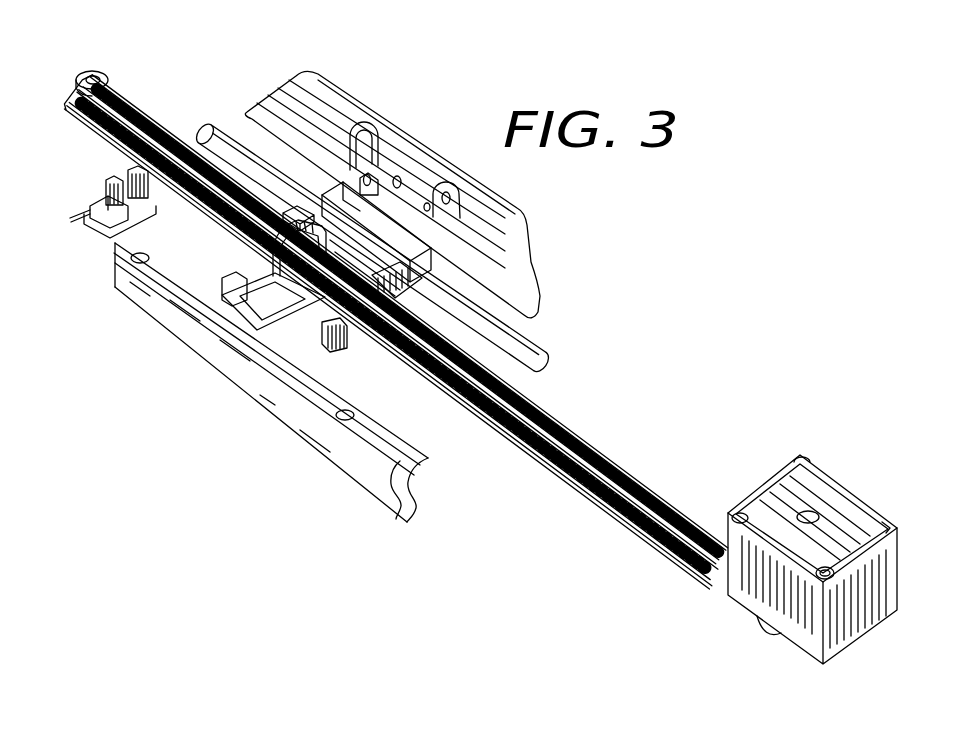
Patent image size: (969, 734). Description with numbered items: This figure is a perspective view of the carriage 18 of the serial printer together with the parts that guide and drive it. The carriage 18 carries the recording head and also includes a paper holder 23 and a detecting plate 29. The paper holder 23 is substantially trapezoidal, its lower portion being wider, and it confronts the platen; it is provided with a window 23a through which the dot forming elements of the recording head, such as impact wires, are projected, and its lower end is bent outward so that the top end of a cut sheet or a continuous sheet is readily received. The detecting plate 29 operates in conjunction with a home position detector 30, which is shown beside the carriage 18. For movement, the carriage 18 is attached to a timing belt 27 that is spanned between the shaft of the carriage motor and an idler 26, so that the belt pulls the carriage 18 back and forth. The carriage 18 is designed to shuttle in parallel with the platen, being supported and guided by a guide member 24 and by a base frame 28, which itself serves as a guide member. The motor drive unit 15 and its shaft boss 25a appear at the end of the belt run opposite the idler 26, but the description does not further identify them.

The stepper motor 15 is at (828, 483).
The carriage 18 is at (350, 322).
The paper holder 23 is at (537, 294).
The window 23a is at (376, 162).
The guide member 24 is at (545, 343).
The motor shaft boss 25a is at (763, 633).
The idler 26 is at (99, 76).
The timing belt 27 is at (619, 470).
The base frame 28 is at (364, 490).
The detecting plate 29 is at (328, 350).
The home position detector 30 is at (98, 180).